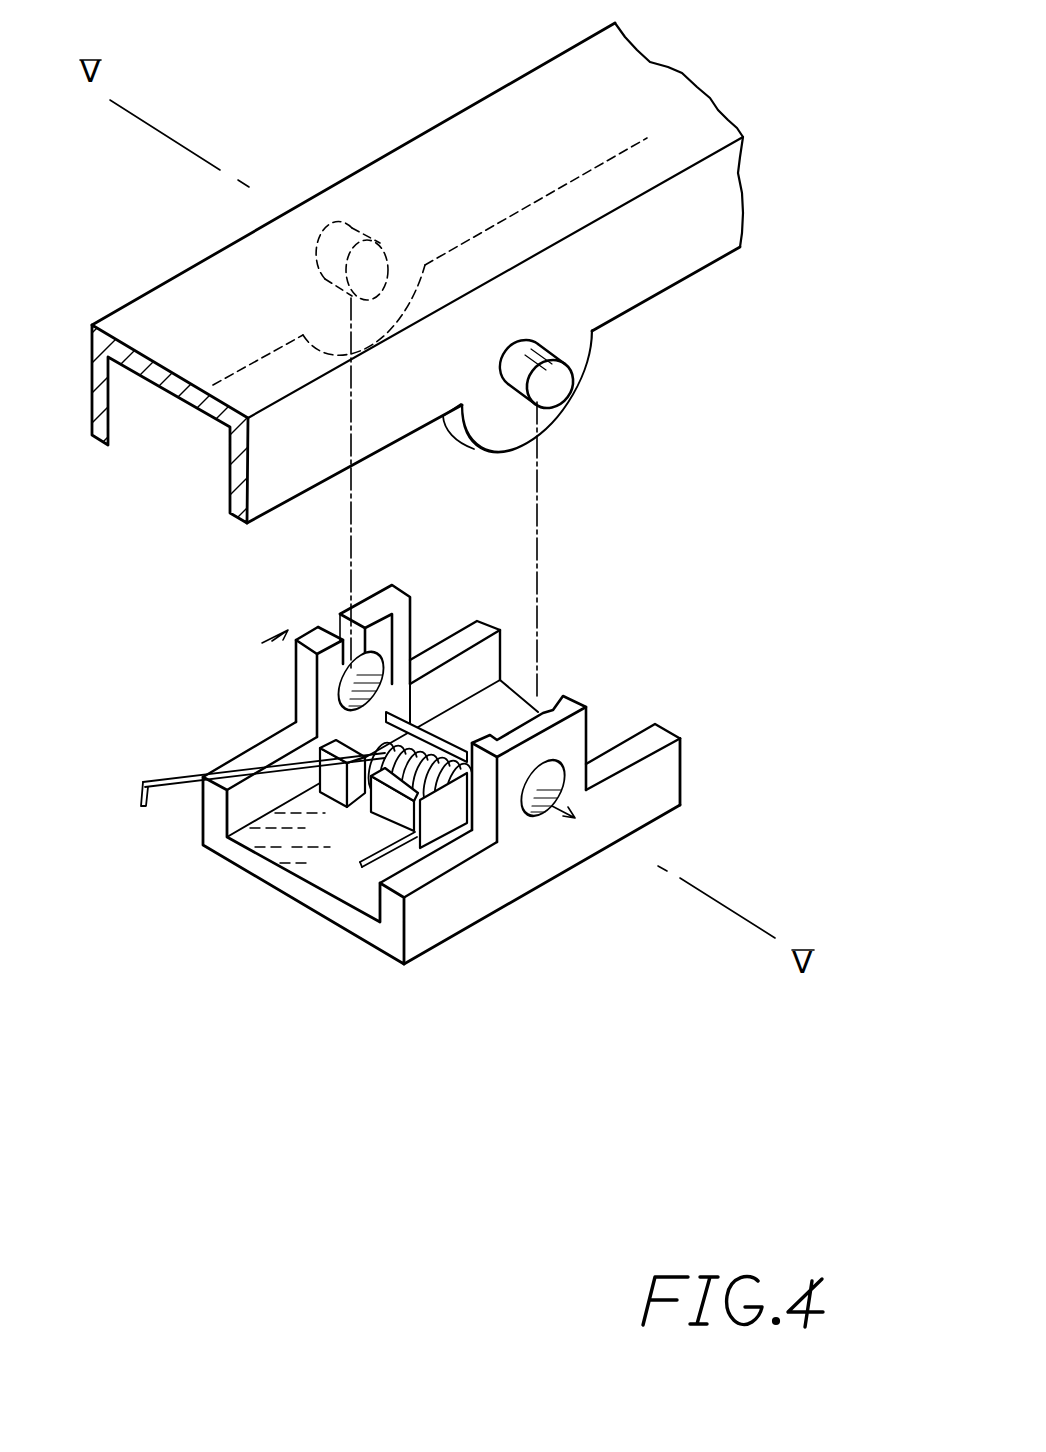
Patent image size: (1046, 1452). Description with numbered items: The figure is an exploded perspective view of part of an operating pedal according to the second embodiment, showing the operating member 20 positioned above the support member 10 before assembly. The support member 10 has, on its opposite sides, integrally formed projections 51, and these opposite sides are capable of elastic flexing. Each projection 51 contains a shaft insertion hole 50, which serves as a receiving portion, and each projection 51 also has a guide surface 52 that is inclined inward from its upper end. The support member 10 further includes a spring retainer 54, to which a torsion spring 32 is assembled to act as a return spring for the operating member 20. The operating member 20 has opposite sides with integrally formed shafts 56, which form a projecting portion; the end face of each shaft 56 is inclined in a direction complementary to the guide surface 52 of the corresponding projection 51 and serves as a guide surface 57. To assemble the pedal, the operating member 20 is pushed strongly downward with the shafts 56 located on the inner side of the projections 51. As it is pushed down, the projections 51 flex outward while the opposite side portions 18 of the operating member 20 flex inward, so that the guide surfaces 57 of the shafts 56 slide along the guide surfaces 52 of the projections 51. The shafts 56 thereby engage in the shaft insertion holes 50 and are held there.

The support member 10 is at (612, 833).
The opposite side portions 18 is at (563, 413).
The operating member 20 is at (516, 107).
The torsion spring 32 is at (243, 768).
The shaft insertion hole 50 is at (382, 686).
The projection 51 is at (293, 683).
The guide surface 52 is at (366, 614).
The spring retainer 54 is at (428, 757).
The shaft 56 is at (583, 347).
The guide surface 57 is at (568, 388).